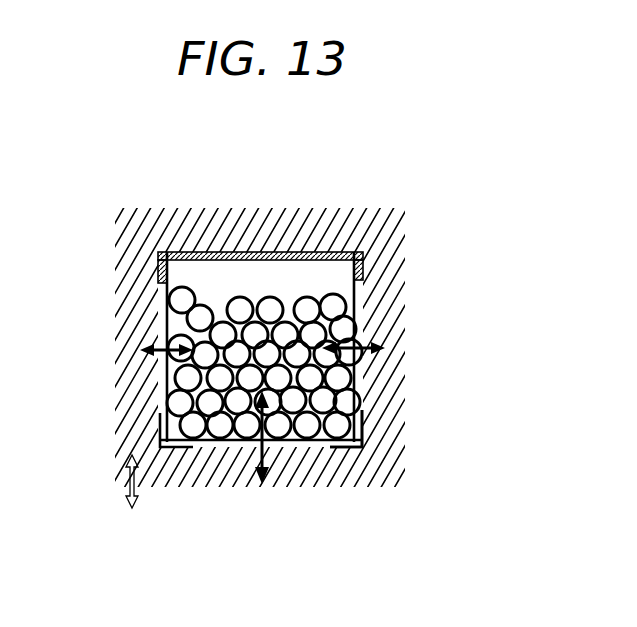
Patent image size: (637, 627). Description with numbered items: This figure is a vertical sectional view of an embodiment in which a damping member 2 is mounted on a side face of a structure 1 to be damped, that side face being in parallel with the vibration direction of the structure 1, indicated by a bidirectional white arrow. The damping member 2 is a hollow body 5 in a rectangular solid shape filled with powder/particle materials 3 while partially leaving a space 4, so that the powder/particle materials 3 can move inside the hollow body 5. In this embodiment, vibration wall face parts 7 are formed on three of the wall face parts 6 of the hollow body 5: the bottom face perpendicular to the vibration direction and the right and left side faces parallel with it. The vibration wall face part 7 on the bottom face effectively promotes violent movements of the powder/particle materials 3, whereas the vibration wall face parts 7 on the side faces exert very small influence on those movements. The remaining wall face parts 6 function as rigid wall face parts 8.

The structure 1 is at (328, 215).
The damping member 2 is at (210, 252).
The powder/particle materials 3 is at (307, 295).
The space 4 is at (293, 268).
The hollow body 5 is at (357, 297).
The wall face parts 6 is at (238, 440).
The vibration wall face part 7 is at (165, 325).
The rigid wall face parts 8 is at (363, 437).